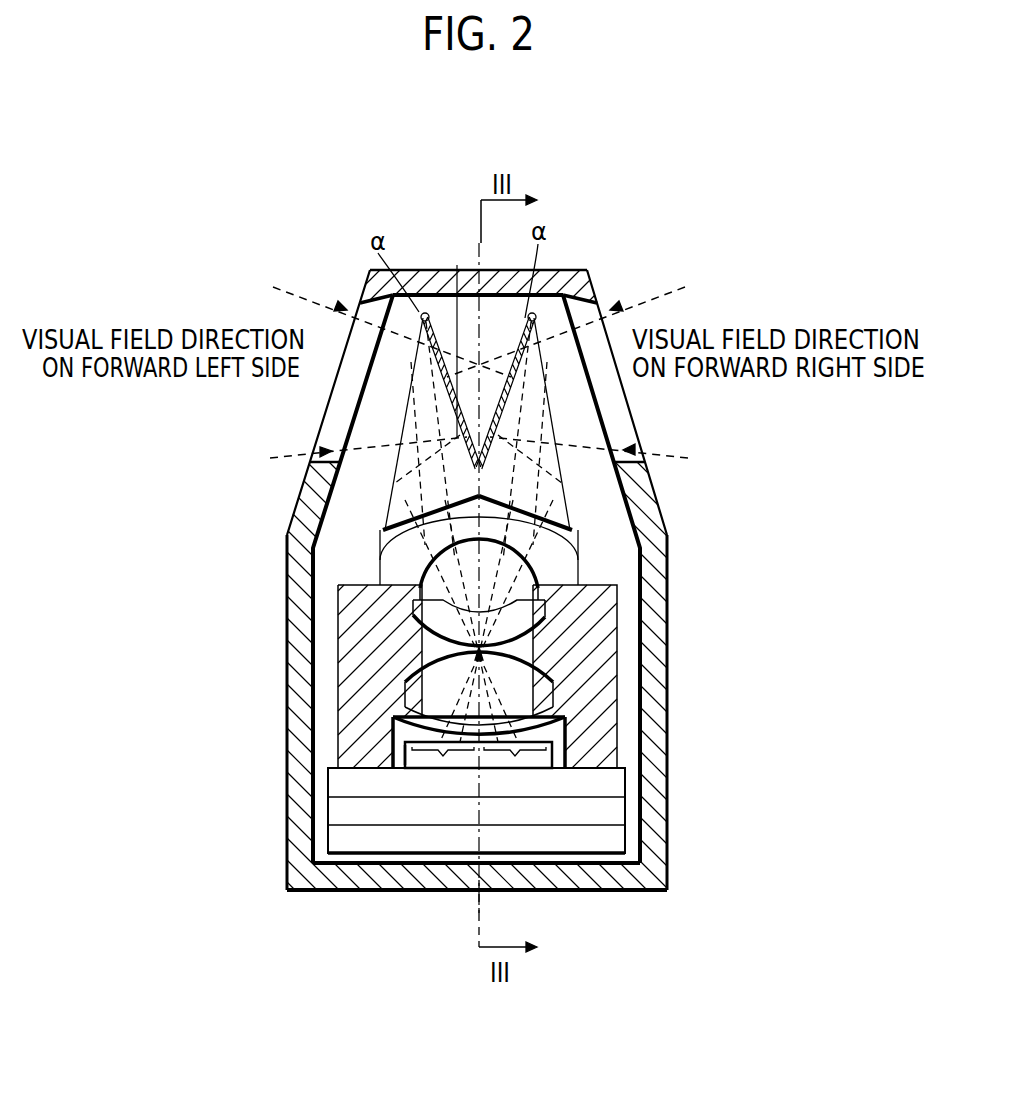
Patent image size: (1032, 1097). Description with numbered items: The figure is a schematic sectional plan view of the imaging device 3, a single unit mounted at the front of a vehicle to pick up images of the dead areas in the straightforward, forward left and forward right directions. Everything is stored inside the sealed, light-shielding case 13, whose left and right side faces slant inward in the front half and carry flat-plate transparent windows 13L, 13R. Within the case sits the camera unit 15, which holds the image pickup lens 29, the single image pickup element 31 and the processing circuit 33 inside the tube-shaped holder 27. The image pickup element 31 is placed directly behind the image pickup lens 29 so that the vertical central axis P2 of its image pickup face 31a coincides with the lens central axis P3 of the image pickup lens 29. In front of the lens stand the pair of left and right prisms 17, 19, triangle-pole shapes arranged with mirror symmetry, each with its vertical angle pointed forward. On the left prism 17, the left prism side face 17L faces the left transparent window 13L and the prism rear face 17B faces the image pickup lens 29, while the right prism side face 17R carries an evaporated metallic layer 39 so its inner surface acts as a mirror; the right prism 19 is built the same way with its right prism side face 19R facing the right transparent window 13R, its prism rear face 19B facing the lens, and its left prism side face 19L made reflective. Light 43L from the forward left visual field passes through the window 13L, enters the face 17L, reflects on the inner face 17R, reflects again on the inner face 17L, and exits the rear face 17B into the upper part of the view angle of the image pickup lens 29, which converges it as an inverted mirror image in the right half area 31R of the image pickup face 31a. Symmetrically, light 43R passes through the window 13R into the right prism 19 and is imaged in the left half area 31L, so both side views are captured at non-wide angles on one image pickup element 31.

The imaging device 3 is at (192, 183).
The case 13 is at (562, 272).
The left transparent window 13L is at (330, 405).
The right transparent window 13R is at (615, 403).
The camera unit 15 is at (597, 582).
The left prism 17 is at (387, 512).
The right prism side face of left prism 17R is at (424, 312).
The left prism side face of left prism 17L is at (345, 441).
The prism rear face of left prism 17B is at (388, 560).
The right prism 19 is at (575, 510).
The left prism side face of right prism 19L is at (530, 315).
The right prism side face of right prism 19R is at (612, 446).
The prism rear face of right prism 19B is at (576, 549).
The holder 27 is at (393, 728).
The image pickup lens 29 is at (415, 605).
The image pickup element 31 is at (463, 762).
The left half area of image pickup face 31L is at (443, 757).
The right half area of image pickup face 31R is at (513, 760).
The image pickup face 31a is at (405, 757).
The processing circuit 33 is at (612, 788).
The metallic layer 39 is at (457, 352).
The light from forward left side 43L is at (273, 287).
The light from forward right side 43R is at (685, 287).
The vertical central axis of image pickup face P2 is at (507, 890).
The lens central axis P3 is at (457, 265).